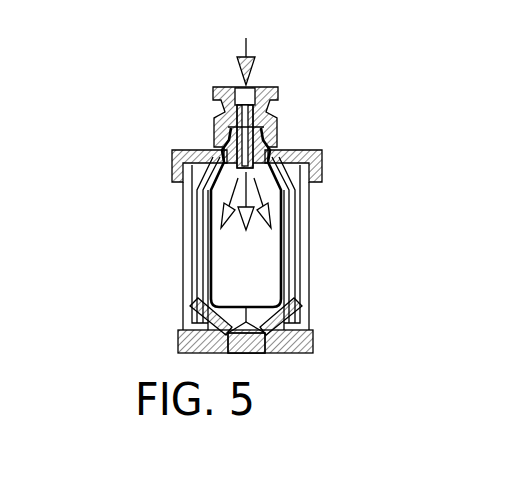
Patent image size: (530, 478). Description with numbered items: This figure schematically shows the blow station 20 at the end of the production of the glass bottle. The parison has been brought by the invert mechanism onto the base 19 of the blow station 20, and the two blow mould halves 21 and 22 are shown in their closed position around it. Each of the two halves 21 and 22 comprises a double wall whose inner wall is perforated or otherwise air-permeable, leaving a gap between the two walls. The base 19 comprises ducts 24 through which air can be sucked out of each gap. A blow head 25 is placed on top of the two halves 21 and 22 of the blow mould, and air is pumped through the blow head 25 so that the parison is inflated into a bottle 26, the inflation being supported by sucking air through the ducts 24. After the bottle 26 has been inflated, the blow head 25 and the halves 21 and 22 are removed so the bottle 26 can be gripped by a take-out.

The base 19 is at (306, 344).
The blow station 20 is at (133, 283).
The blow mould half 21 is at (185, 222).
The blow mould half 22 is at (306, 232).
The ducts 24 is at (205, 318).
The blow head 25 is at (217, 125).
The bottle 26 is at (283, 288).